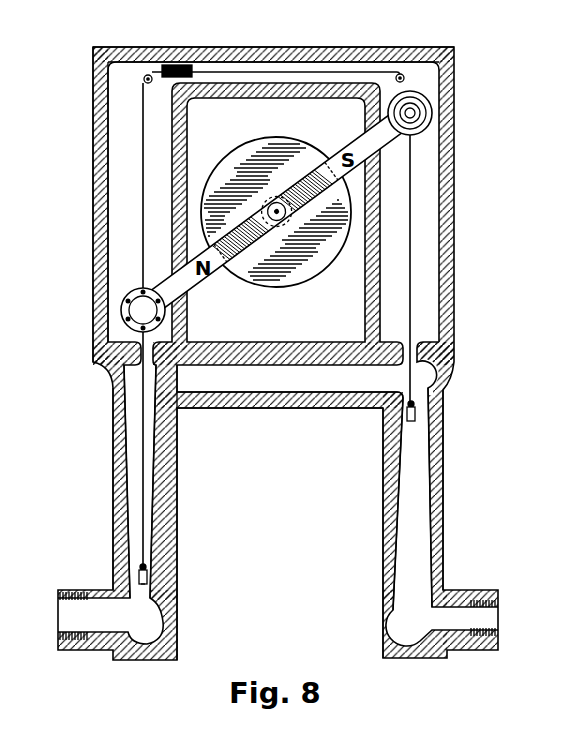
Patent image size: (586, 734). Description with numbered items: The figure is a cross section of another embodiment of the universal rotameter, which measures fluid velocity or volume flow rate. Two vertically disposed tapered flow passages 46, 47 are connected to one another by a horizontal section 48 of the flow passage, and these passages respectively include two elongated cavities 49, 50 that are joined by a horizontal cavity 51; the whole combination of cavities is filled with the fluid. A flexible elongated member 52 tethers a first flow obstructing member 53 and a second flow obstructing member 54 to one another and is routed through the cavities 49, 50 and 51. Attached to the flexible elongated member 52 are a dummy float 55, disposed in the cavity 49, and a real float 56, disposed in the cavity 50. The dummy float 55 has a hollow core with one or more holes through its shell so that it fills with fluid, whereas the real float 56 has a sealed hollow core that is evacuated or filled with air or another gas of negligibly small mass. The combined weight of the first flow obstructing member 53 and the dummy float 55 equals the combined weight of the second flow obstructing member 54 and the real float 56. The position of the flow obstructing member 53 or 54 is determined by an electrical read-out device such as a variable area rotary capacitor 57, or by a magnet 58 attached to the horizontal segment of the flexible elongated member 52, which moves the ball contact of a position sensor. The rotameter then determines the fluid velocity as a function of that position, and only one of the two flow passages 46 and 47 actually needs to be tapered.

The tapered flow passage 46 is at (137, 490).
The tapered flow passage 47 is at (420, 520).
The horizontal section of the flow passage 48 is at (336, 378).
The elongated cavity 49 is at (124, 197).
The elongated cavity 50 is at (433, 198).
The horizontal cavity 51 is at (338, 63).
The flexible elongated member 52 is at (142, 437).
The first flow obstructing member 53 is at (140, 580).
The second flow obstructing member 54 is at (418, 412).
The dummy float 55 is at (132, 290).
The real float 56 is at (428, 132).
The variable area rotary capacitor 57 is at (270, 292).
The magnet 58 is at (189, 64).